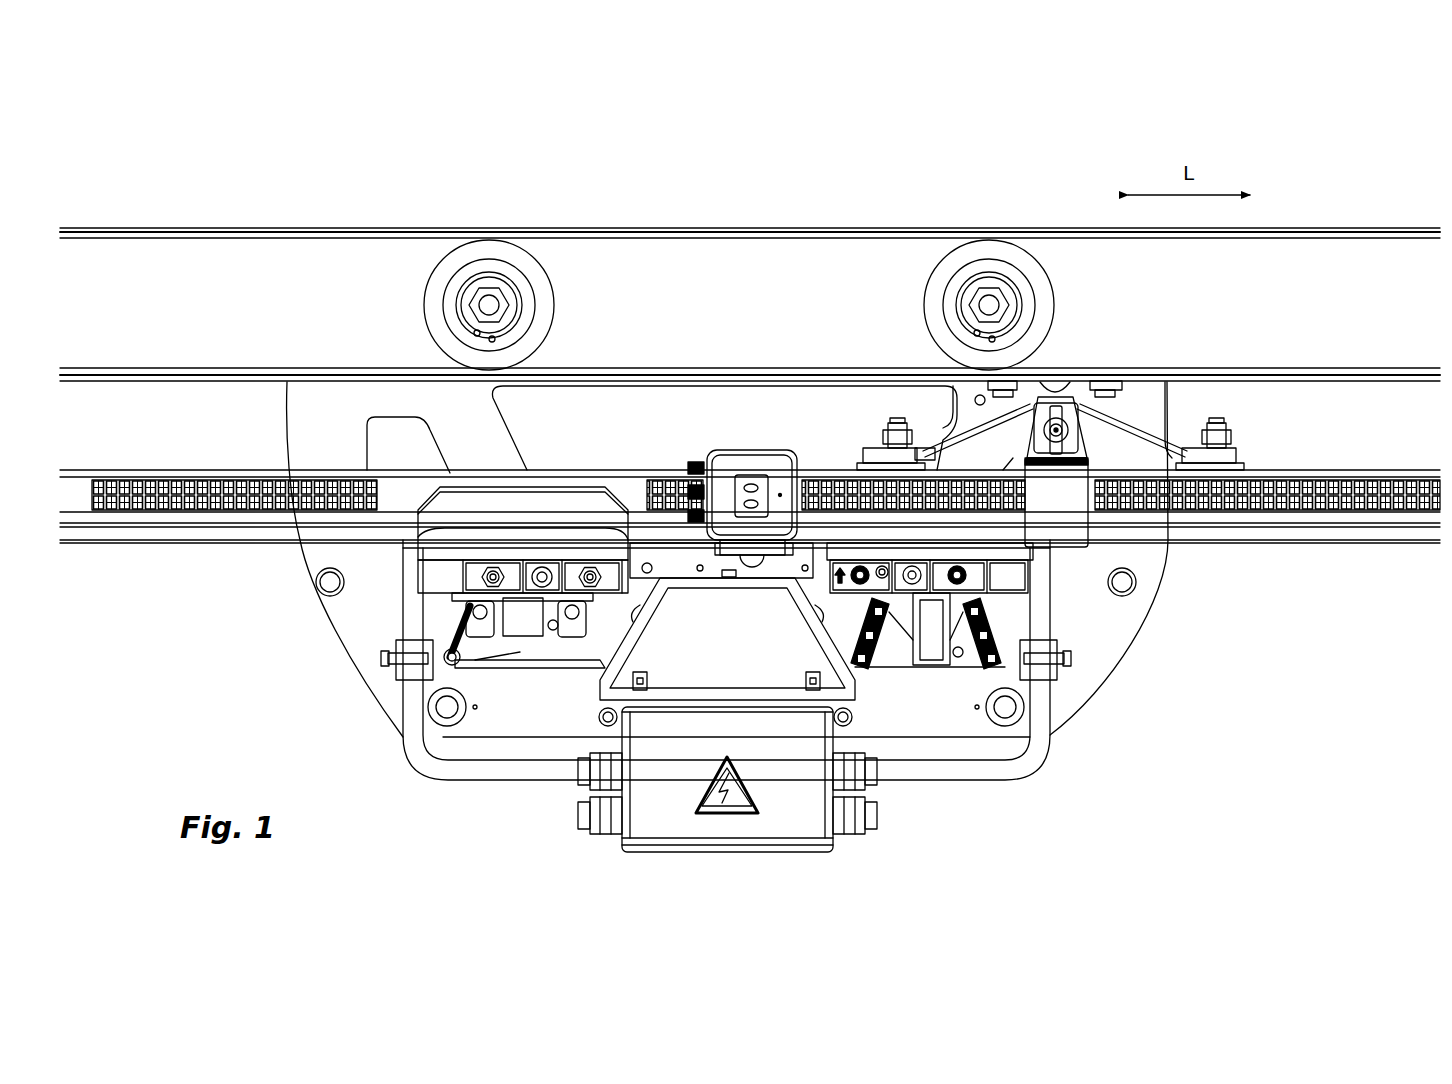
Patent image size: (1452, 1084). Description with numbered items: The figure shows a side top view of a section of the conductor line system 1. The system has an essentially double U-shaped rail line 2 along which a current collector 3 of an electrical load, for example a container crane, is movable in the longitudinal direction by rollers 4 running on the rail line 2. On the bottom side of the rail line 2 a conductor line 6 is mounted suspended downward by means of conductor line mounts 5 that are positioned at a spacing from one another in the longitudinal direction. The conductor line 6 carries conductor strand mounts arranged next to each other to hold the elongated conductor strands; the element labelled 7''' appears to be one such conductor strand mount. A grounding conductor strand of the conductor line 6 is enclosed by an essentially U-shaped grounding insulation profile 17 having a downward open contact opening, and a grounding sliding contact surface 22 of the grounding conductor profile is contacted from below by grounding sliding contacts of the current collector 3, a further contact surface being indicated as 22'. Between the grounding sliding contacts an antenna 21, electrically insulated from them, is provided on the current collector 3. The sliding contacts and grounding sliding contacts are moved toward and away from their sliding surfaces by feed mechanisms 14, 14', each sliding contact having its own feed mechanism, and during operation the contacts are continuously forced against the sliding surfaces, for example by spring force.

The conductor line system 1 is at (1080, 760).
The rail line 2 is at (1347, 228).
The current collector 3 is at (1097, 668).
The rollers 4 is at (930, 270).
The conductor line mounts 5 is at (1092, 440).
The conductor line 6 is at (1336, 535).
The module housing 7''' is at (957, 547).
The feed mechanism 14 is at (523, 728).
The current collector arm 14' is at (926, 724).
The grounding insulation profile 17 is at (118, 543).
The antenna 21 is at (423, 522).
The grounding sliding contact surface 22 is at (430, 601).
The collector head 22' is at (1015, 612).